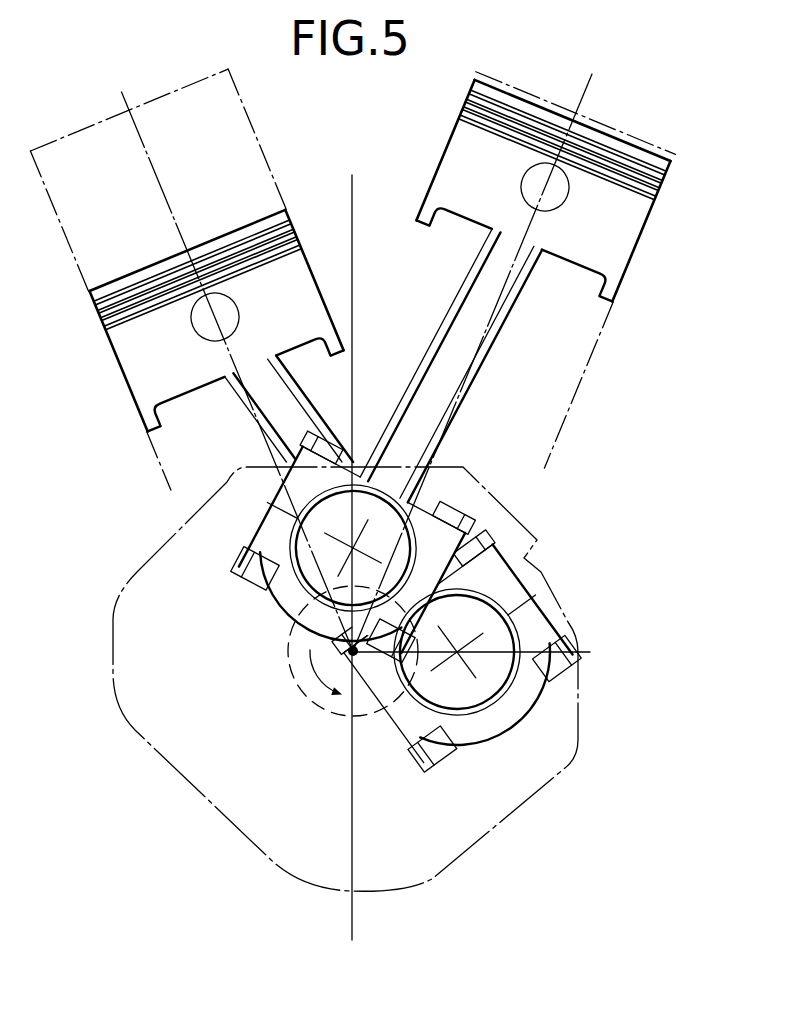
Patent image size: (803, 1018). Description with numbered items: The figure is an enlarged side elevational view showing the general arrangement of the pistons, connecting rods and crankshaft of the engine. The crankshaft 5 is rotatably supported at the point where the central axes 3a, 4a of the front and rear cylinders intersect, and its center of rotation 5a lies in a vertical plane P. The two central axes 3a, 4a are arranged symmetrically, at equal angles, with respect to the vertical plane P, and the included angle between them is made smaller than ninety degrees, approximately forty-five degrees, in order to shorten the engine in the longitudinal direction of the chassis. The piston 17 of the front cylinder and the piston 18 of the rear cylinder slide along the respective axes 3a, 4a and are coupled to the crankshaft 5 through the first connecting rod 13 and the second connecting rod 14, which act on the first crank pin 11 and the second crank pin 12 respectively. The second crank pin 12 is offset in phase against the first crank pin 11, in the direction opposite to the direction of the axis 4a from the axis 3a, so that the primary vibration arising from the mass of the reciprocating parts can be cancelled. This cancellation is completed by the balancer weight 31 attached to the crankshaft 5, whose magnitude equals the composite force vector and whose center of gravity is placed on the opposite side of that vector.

The crankshaft 5 is at (300, 703).
The crankshaft axis 5a is at (356, 656).
The first crank pin 11 is at (481, 607).
The second crank pin 12 is at (333, 503).
The first connecting rod 13 is at (314, 407).
The second connecting rod 14 is at (484, 363).
The piston 17 is at (119, 363).
The piston 18 is at (630, 244).
The balancer weight 31 is at (182, 781).
The central axis 3a is at (124, 101).
The central axis 4a is at (582, 96).
The vertical plane P is at (354, 280).